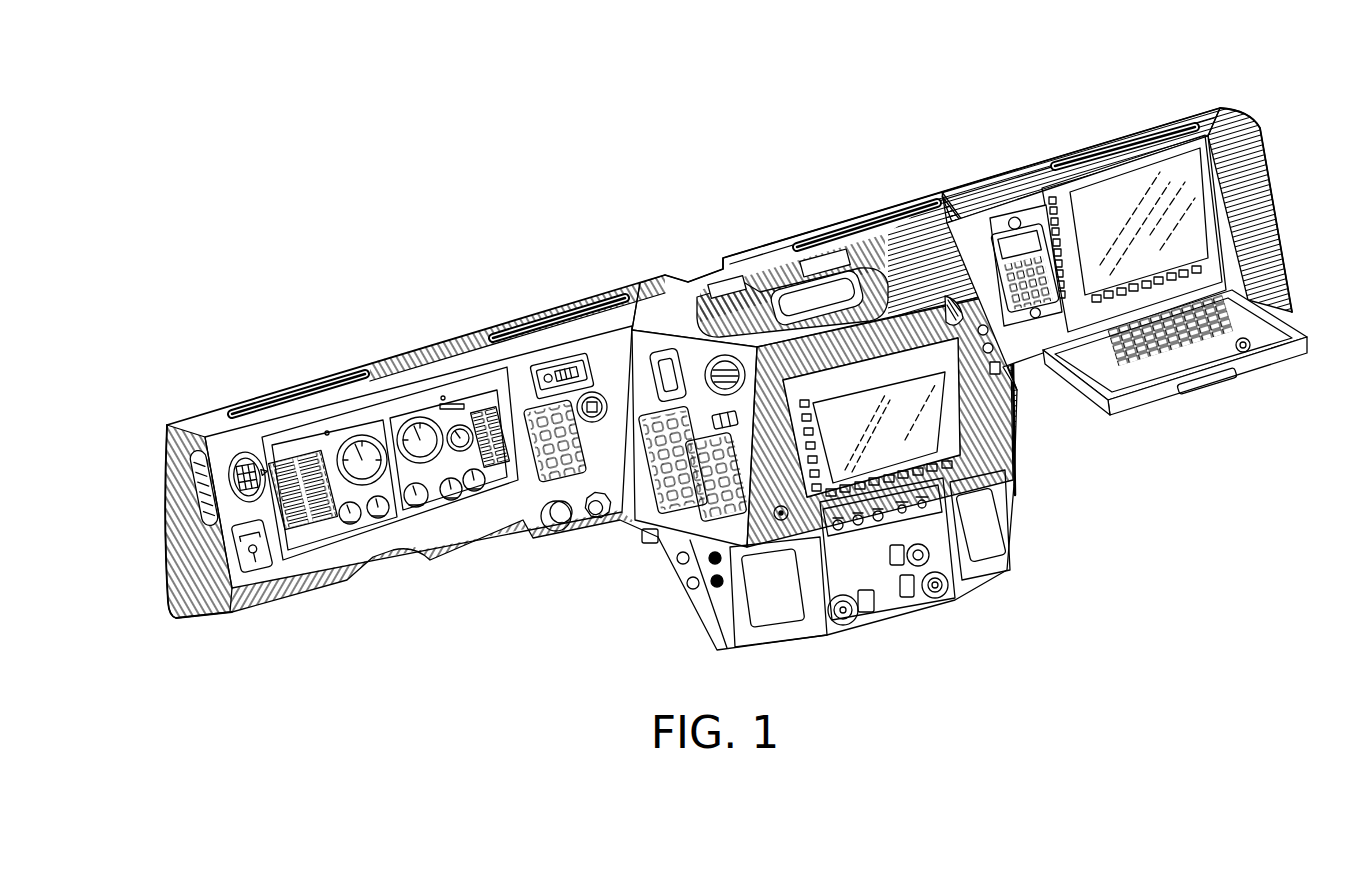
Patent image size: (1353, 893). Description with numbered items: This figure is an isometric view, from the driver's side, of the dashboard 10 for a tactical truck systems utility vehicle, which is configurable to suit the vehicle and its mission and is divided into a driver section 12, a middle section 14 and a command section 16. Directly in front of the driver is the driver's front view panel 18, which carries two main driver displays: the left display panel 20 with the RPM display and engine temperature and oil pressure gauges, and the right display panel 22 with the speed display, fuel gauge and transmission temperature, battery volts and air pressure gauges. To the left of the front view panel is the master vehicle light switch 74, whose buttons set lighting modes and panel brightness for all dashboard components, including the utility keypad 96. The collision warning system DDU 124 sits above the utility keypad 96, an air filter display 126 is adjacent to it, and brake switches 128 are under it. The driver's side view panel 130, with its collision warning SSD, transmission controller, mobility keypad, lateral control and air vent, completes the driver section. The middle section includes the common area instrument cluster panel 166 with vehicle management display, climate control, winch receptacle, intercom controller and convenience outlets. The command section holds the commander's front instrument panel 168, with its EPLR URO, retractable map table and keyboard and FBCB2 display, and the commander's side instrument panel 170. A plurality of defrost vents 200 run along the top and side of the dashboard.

The dashboard 10 is at (352, 215).
The driver section 12 is at (652, 237).
The middle section 14 is at (928, 152).
The command section 16 is at (1210, 68).
The driver's front view panel 18 is at (405, 595).
The left display panel 20 is at (322, 528).
The right display panel 22 is at (460, 492).
The master vehicle light switch (MVLS) 74 is at (235, 458).
The utility keypad 96 is at (543, 474).
The collision warning system (CWS) DDU 124 is at (540, 383).
The air filter display 126 is at (600, 397).
The brake switches 128 is at (598, 512).
The driver's side view panel 130 is at (543, 290).
The common area instrument cluster panel 166 is at (908, 656).
The commander's front instrument panel 168 is at (1207, 436).
The commander's side instrument panel 170 is at (1042, 446).
The defrost vents 200 is at (292, 392).